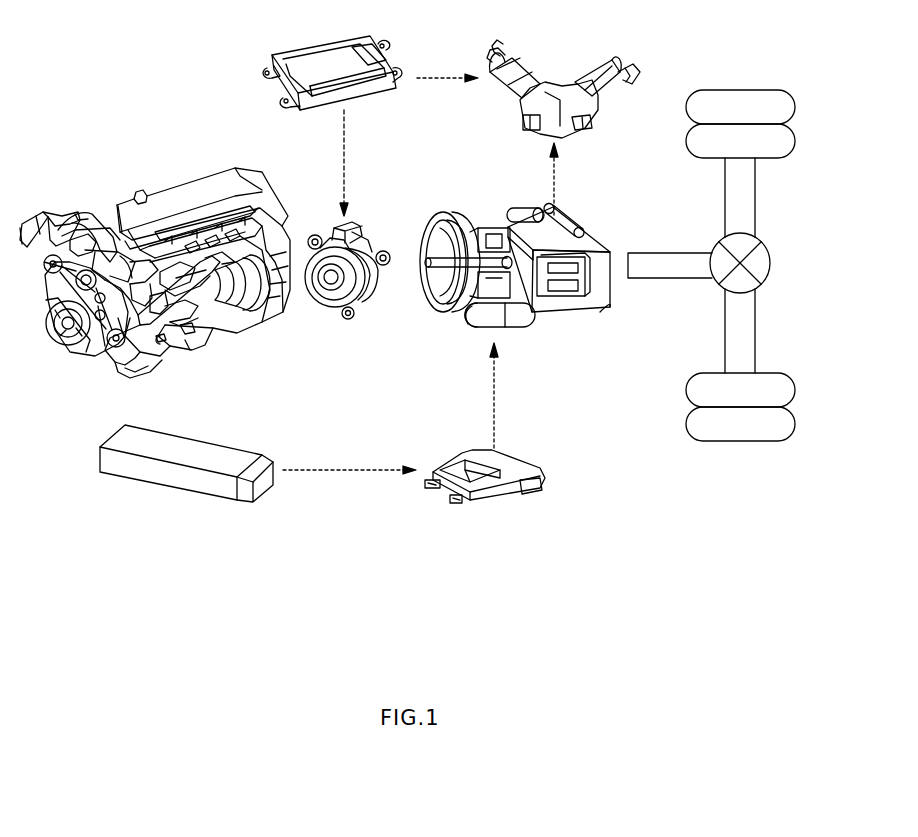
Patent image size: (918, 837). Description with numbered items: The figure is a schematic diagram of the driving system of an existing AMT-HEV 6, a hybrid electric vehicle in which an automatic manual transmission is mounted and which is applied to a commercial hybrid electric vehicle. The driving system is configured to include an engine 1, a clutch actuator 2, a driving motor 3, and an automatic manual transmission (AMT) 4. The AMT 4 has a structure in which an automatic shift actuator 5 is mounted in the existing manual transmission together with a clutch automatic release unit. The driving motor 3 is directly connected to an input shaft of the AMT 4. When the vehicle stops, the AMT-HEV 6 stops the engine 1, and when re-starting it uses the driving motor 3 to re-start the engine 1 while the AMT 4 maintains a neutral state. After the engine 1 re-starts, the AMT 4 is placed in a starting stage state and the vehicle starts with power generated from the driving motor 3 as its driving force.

The engine 1 is at (178, 198).
The clutch actuator 2 is at (370, 235).
The driving motor 3 is at (512, 318).
The automatic manual transmission (AMT) 4 is at (580, 282).
The automatic shift actuator 5 is at (560, 95).
The AMT-HEV 6 is at (230, 541).